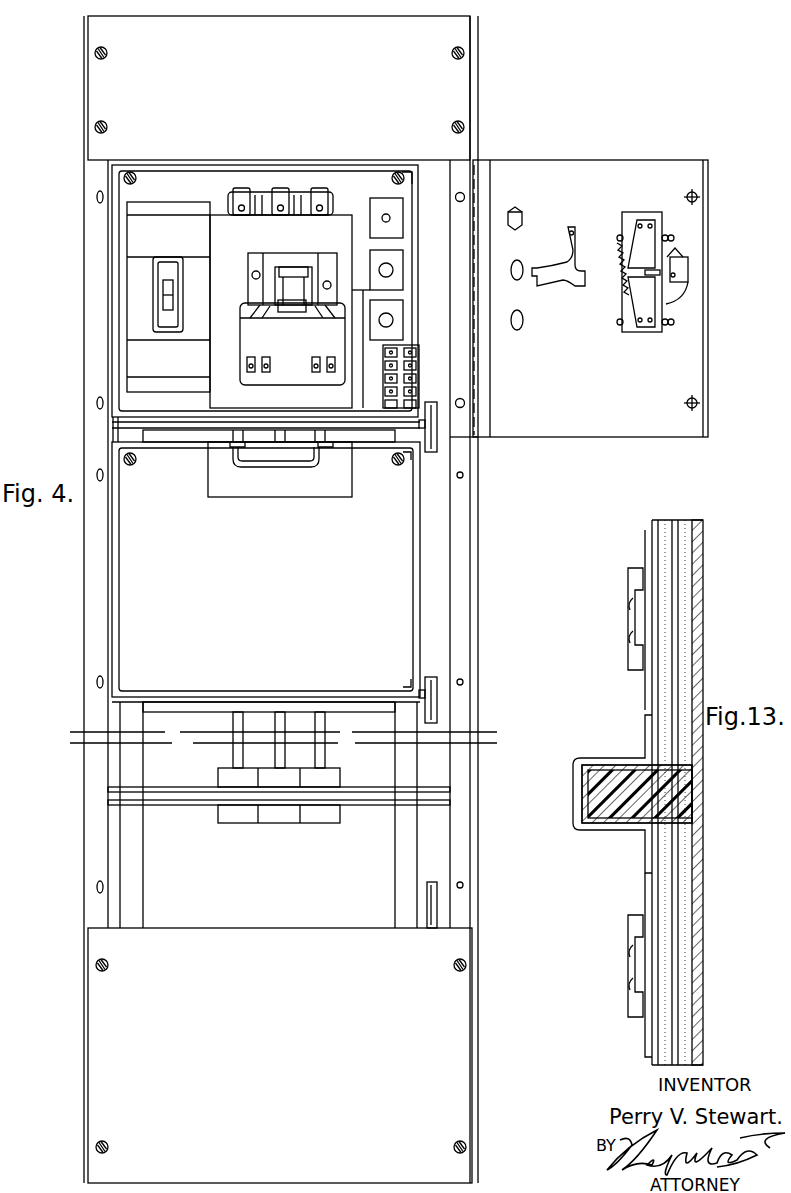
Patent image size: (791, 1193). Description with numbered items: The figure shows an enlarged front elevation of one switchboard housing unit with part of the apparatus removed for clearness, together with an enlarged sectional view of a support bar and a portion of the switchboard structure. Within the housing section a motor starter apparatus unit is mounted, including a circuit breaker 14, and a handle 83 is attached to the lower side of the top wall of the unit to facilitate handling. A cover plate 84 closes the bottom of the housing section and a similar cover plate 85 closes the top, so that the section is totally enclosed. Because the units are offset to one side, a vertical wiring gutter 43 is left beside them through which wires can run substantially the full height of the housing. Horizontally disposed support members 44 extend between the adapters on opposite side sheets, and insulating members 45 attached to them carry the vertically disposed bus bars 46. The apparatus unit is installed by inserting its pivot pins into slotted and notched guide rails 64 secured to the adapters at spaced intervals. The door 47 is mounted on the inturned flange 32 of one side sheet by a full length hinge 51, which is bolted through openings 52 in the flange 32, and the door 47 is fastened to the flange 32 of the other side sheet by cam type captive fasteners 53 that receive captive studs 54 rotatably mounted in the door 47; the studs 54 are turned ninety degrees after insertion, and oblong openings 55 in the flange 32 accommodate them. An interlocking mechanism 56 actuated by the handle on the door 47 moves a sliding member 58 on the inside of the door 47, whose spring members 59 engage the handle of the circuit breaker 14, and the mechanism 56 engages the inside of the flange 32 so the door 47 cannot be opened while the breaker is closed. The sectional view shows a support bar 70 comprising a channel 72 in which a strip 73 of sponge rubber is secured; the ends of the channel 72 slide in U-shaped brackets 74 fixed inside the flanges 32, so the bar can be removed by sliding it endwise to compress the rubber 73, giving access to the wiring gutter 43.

In FIG. 4, the circuit breaker 14 is at (135, 357).
In FIG. 4, the inturned flange 32 is at (85, 590).
In FIG. 4, the vertical wiring gutter 43 is at (440, 556).
In FIG. 4, the support member 44 is at (380, 805).
In FIG. 4, the insulating member 45 is at (290, 779).
In FIG. 4, the vertical bus bar 46 is at (280, 758).
In FIG. 4, the door 47 is at (708, 350).
In FIG. 13, the door 47 is at (705, 680).
In FIG. 4, the full length hinge 51 is at (483, 372).
In FIG. 4, the opening 52 is at (464, 476).
In FIG. 13, the captive fastener 53 is at (625, 578).
In FIG. 4, the captive stud 54 is at (698, 197).
In FIG. 4, the oblong opening 55 is at (95, 197).
In FIG. 4, the interlocking mechanism 56 is at (679, 256).
In FIG. 4, the sliding member 58 is at (642, 212).
In FIG. 4, the spring member 59 is at (619, 292).
In FIG. 4, the guide rail 64 is at (437, 691).
In FIG. 13, the support bar 70 is at (557, 804).
In FIG. 13, the channel 72 is at (612, 828).
In FIG. 13, the strip of sponge rubber 73 is at (690, 796).
In FIG. 13, the U-shaped bracket 74 is at (613, 758).
In FIG. 4, the handle 83 is at (247, 475).
In FIG. 4, the cover plate 84 is at (103, 1031).
In FIG. 4, the cover plate 85 is at (105, 78).